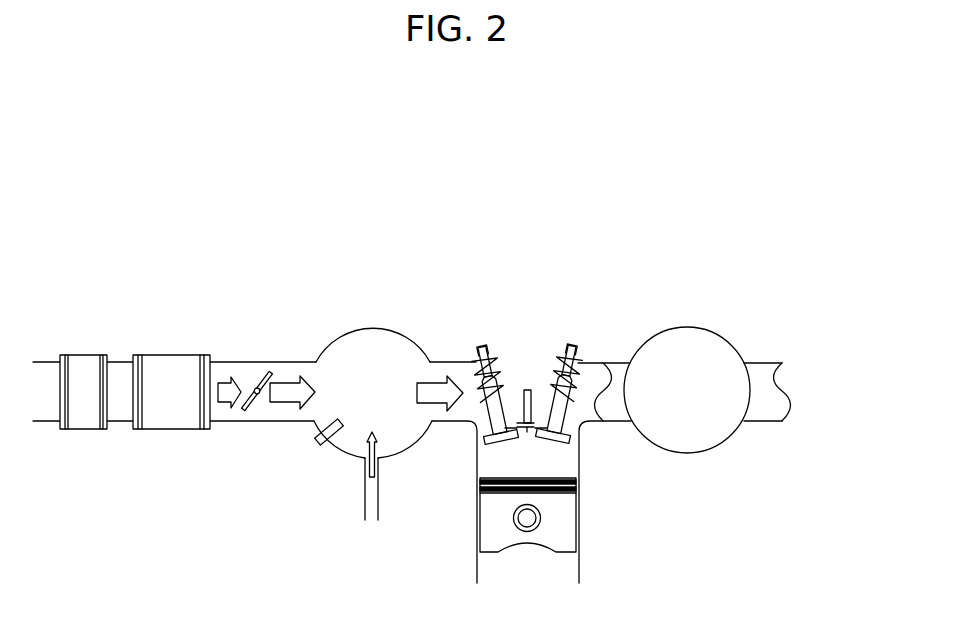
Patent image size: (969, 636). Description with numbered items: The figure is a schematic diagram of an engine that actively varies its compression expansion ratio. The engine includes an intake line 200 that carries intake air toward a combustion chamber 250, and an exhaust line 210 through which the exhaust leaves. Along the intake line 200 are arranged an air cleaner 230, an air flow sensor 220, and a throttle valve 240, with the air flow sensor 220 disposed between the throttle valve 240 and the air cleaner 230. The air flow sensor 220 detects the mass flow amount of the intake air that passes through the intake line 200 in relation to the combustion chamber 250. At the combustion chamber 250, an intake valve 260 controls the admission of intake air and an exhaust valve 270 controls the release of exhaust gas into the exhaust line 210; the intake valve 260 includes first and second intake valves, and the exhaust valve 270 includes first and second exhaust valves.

The intake line 200 is at (252, 362).
The exhaust line 210 is at (618, 368).
The air flow sensor 220 is at (175, 429).
The air cleaner 230 is at (85, 429).
The throttle valve 240 is at (262, 398).
The combustion chamber 250 is at (527, 388).
The intake valve 260 is at (482, 347).
The exhaust valve 270 is at (572, 347).